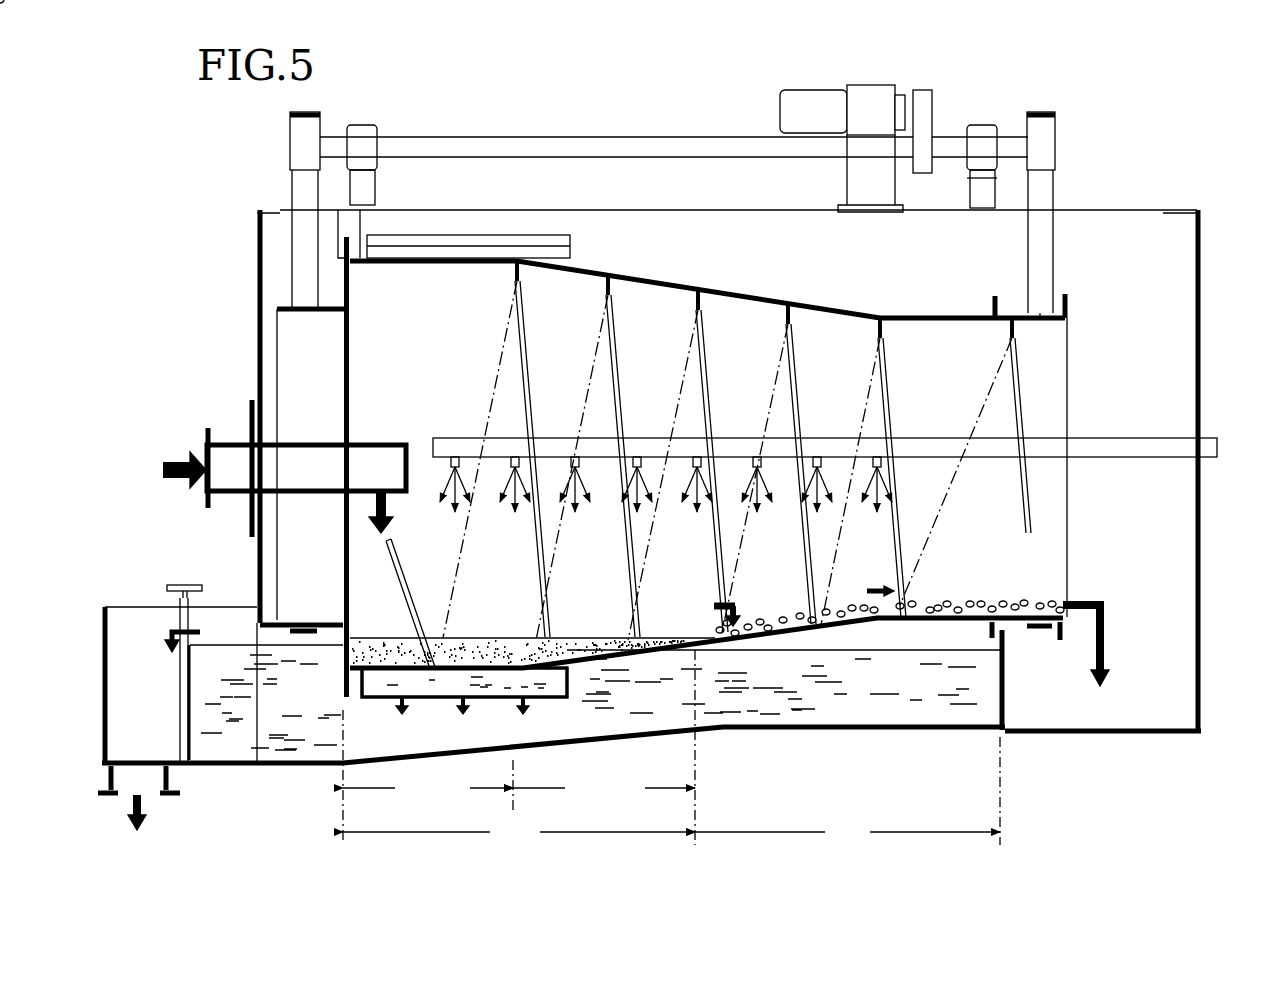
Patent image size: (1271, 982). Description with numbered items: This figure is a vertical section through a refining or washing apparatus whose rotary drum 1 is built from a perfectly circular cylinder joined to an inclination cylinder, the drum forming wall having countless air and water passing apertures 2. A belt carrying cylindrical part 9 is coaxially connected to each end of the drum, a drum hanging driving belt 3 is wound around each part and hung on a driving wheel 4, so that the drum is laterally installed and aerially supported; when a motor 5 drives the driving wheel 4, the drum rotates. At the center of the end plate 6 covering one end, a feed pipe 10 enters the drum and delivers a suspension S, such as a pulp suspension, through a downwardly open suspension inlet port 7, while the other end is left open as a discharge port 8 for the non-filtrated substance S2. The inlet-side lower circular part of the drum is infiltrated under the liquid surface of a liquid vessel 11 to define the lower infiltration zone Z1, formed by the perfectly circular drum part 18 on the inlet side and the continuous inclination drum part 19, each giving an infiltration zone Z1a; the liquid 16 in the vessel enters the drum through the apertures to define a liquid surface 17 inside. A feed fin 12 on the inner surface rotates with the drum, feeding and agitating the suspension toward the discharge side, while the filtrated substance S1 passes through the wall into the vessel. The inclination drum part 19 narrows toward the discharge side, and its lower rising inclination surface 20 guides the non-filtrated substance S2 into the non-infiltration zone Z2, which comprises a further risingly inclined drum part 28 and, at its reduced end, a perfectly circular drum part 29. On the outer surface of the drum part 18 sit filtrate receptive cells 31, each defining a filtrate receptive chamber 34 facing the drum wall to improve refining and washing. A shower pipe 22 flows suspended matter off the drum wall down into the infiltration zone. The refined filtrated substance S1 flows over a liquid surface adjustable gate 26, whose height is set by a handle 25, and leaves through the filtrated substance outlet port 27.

The rotary drum 1 is at (590, 260).
The air and water passing apertures 2 is at (392, 268).
The drum hanging driving belt 3 is at (296, 203).
The driving wheel 4 is at (296, 150).
The motor 5 is at (780, 110).
The end plate 6 is at (340, 367).
The suspension inlet port 7 is at (393, 504).
The discharge port 8 is at (1055, 500).
The belt carrying cylindrical part 9 is at (286, 304).
The feed pipe 10 is at (302, 445).
The liquid vessel 11 is at (769, 727).
The feed fin 12 is at (770, 412).
The liquid 16 is at (917, 699).
The liquid surface 17 is at (306, 646).
The drum part of a perfectly circular cylinder 18 is at (446, 260).
The inclination drum part 19 is at (664, 287).
The lower rising inclination surface 20 is at (658, 638).
The shower pipe 22 is at (1099, 438).
The handle 25 is at (182, 587).
The liquid surface adjustable gate 26 is at (180, 690).
The filtrated substance outlet port 27 is at (146, 787).
The inclination drum part 28 is at (797, 307).
The drum part of a perfectly circular cylinder 29 is at (937, 317).
The filtrate receptive cell 31 is at (512, 252).
The filtrate receptive chamber 34 is at (570, 678).
The suspension S is at (174, 466).
The filtrated substance S1 is at (464, 698).
The non-filtrated substance S2 is at (728, 610).
The lower infiltration zone Z1 is at (519, 748).
The infiltration zone Z1a is at (519, 775).
The non-infiltration zone Z2 is at (847, 791).